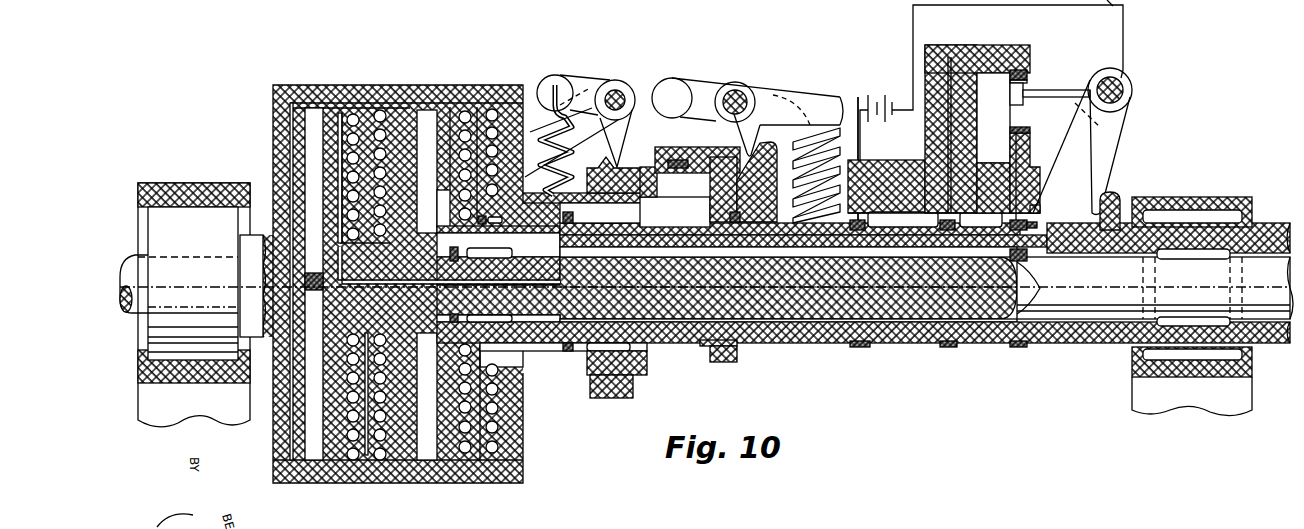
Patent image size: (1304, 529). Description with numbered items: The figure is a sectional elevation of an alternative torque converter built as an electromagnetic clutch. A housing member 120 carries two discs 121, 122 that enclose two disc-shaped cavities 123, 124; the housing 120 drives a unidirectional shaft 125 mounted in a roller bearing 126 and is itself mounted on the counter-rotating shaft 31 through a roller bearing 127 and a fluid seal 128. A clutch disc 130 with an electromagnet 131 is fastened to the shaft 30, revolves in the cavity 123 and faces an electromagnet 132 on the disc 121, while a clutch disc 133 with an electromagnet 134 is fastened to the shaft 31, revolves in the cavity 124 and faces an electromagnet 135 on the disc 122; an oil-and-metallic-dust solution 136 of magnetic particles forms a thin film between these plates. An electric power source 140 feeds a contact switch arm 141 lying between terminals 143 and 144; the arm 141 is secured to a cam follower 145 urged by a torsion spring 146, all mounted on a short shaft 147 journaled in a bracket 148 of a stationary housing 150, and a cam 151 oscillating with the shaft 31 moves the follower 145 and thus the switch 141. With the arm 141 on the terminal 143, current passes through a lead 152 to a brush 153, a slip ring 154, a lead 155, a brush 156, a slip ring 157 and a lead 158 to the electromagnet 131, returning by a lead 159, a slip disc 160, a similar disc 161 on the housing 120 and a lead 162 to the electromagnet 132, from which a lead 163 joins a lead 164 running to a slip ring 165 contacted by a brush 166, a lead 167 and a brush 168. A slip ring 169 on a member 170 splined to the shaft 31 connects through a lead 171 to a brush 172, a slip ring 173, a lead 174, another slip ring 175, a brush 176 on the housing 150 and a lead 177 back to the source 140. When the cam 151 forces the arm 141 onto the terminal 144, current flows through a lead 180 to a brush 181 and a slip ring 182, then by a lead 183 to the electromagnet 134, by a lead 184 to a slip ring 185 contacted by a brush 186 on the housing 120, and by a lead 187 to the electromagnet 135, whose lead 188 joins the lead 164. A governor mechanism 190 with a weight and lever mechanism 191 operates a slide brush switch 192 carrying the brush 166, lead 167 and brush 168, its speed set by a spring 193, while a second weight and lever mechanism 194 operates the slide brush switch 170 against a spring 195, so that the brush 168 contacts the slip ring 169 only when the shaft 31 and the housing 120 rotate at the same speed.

The shaft 30 is at (1282, 283).
The shaft 31 is at (1210, 250).
The housing member 120 is at (276, 86).
The clutch disc 121 is at (395, 450).
The clutch disc 122 is at (510, 455).
The disc-shaped enclosed cavity 123 is at (315, 455).
The disc-shaped enclosed cavity 124 is at (430, 455).
The unidirectional shaft 125 is at (128, 258).
The roller bearing 126 is at (218, 207).
The roller bearing 127 is at (615, 290).
The fluid seal 128 is at (568, 226).
The clutch disc 130 is at (330, 455).
The electromagnet 131 is at (353, 114).
The electromagnet 132 is at (382, 124).
The clutch disc 133 is at (455, 455).
The electromagnet 134 is at (465, 123).
The electromagnet 135 is at (492, 110).
The oil-and-metallic-dust solution 136 is at (482, 397).
The electric power source 140 is at (892, 93).
The contact switch arm 141 is at (1028, 88).
The terminal 143 is at (1017, 126).
The terminal 144 is at (1028, 70).
The cam follower 145 is at (1115, 145).
The torsion spring 146 is at (1122, 78).
The short shaft 147 is at (1132, 92).
The bracket 148 is at (1068, 118).
The housing 150 is at (935, 160).
The cam 151 is at (1120, 192).
The lead 152 is at (1032, 178).
The brush 153 is at (1042, 212).
The slip ring 154 is at (1040, 224).
The lead 155 is at (1072, 255).
The brush 156 is at (1030, 256).
The slip ring 157 is at (1037, 280).
The lead 158 is at (970, 290).
The lead 159 is at (339, 147).
The slip disc 160 is at (320, 283).
The slip disc 161 is at (278, 298).
The lead 162 is at (291, 165).
The lead 163 is at (440, 97).
The lead 164 is at (532, 258).
The slip ring 165 is at (612, 226).
The brush 166 is at (660, 150).
The lead 167 is at (680, 160).
The brush 168 is at (616, 210).
The slip ring 169 is at (712, 158).
The slide brush switch 170 is at (745, 172).
The lead 171 is at (740, 194).
The brush 172 is at (740, 218).
The slip ring 173 is at (716, 232).
The lead 174 is at (800, 232).
The slip ring 175 is at (905, 212).
The brush 176 is at (876, 212).
The lead 177 is at (866, 165).
The lead 180 is at (1012, 48).
The brush 181 is at (955, 218).
The slip ring 182 is at (1015, 220).
The lead 183 is at (852, 232).
The lead 184 is at (440, 250).
The slip ring 185 is at (490, 258).
The brush 186 is at (456, 261).
The lead 187 is at (508, 262).
The lead 188 is at (541, 88).
The governor mechanism 190 is at (627, 78).
The weight and lever mechanism 191 is at (622, 94).
The slide brush switch 192 is at (592, 178).
The spring 193 is at (568, 142).
The weight and lever mechanism 194 is at (737, 78).
The spring 195 is at (848, 142).